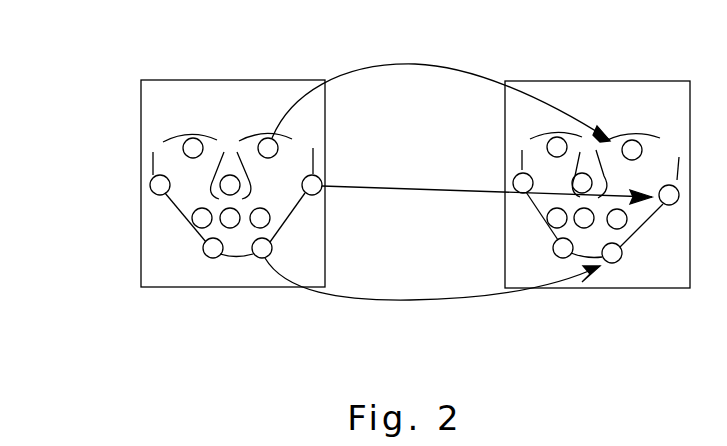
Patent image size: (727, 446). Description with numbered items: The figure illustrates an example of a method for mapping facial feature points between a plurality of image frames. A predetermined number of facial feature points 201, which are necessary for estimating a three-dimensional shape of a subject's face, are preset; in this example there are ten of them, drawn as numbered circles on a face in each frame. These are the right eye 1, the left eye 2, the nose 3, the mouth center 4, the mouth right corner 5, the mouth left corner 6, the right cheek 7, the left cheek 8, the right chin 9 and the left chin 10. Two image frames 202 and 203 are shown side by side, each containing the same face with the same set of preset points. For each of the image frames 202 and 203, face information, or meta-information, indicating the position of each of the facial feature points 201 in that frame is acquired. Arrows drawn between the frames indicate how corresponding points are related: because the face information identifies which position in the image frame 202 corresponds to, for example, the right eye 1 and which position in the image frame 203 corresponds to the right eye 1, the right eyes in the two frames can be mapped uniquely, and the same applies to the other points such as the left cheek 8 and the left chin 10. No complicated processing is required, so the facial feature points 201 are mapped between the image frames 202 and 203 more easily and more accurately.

The facial feature points 201 is at (156, 181).
The image frame 202 is at (285, 80).
The image frame 203 is at (647, 81).
The right eye 1 is at (375, 147).
The left eye 2 is at (450, 149).
The nose 3 is at (406, 184).
The mouth center 4 is at (407, 218).
The mouth right corner 5 is at (379, 218).
The mouth left corner 6 is at (438, 218).
The right cheek 7 is at (341, 184).
The left cheek 8 is at (490, 190).
The right chin 9 is at (388, 248).
The left chin 10 is at (437, 250).